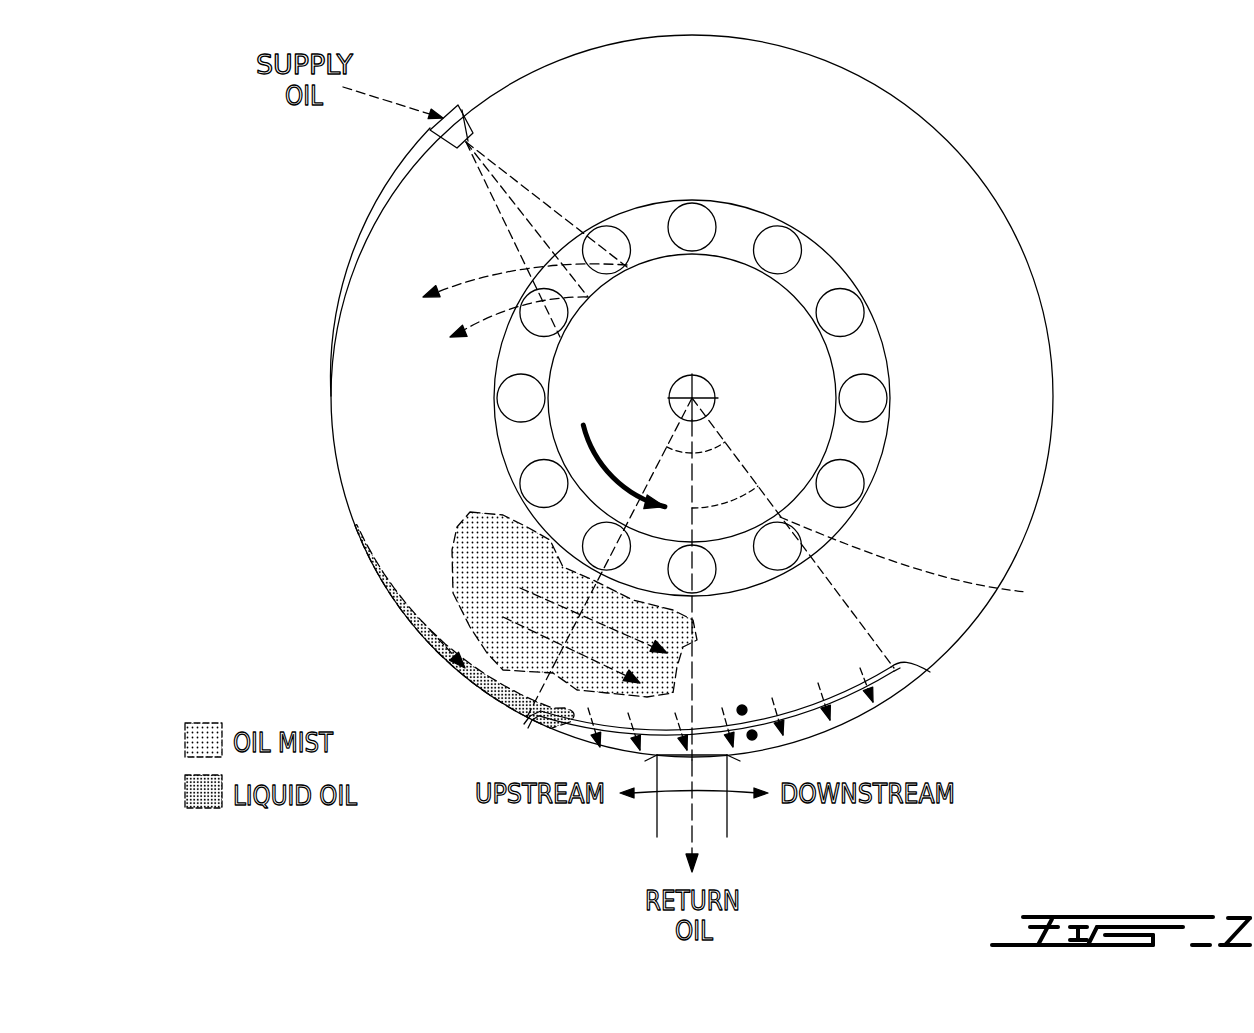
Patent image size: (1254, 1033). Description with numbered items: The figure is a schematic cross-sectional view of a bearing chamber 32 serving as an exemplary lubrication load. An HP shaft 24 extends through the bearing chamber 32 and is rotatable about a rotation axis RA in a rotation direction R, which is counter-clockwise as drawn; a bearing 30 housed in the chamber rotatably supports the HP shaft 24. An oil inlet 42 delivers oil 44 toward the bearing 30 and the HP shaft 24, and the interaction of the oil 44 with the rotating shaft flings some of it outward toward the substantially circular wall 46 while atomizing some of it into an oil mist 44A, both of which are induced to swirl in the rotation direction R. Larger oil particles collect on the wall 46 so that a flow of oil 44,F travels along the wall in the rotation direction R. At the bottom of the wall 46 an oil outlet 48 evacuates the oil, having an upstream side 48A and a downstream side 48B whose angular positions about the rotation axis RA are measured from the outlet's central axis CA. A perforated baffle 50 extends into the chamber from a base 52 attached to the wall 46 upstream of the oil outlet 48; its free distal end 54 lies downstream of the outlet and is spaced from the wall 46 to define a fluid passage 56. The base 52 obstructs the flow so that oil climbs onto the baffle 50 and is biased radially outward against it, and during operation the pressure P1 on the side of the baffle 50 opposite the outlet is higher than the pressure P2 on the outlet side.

The HP shaft 24 is at (708, 339).
The bearing 30 is at (805, 270).
The bearing chamber 32 is at (722, 143).
The oil inlet 42 is at (448, 112).
The oil 44 is at (490, 158).
The oil mist 44A is at (492, 557).
The flow of oil 44,F is at (392, 600).
The wall 46 is at (363, 247).
The oil outlet 48 is at (700, 760).
The upstream side 48A is at (650, 757).
The downstream side 48B is at (740, 757).
The perforated baffle 50 is at (802, 698).
The base 52 is at (537, 713).
The distal end 54 is at (893, 678).
The fluid passage 56 is at (893, 680).
The rotation direction R is at (580, 447).
The rotation axis RA is at (718, 398).
The central axis CA is at (921, 563).
The pressure P1 is at (742, 705).
The pressure P2 is at (760, 735).